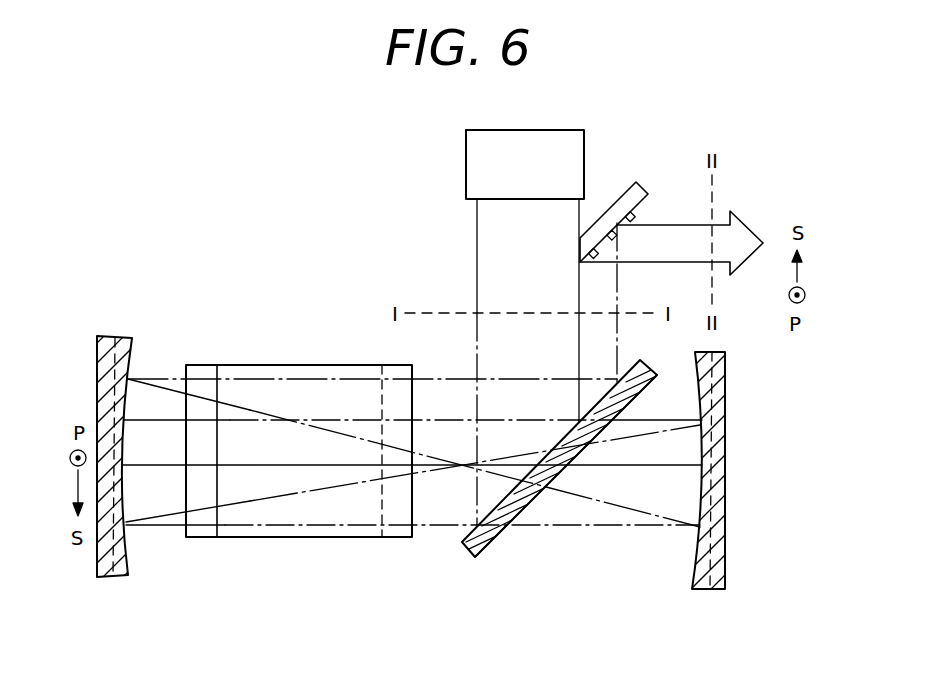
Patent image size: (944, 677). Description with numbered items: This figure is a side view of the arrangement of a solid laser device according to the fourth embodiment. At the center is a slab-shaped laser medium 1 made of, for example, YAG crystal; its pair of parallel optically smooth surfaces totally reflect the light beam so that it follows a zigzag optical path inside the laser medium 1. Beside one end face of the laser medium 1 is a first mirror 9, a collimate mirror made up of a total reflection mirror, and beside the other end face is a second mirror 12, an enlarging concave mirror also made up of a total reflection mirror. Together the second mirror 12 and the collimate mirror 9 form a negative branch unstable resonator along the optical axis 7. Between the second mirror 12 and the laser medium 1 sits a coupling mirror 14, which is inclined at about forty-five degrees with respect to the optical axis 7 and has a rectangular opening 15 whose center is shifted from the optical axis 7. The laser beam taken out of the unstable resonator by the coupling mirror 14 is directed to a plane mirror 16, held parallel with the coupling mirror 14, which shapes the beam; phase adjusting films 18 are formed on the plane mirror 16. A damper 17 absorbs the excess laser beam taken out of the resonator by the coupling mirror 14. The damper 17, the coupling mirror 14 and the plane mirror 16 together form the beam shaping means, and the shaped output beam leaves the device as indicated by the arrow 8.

The slab-shaped laser medium 1 is at (311, 539).
The optical axis 7 is at (168, 464).
The output beam arrow 8 is at (755, 222).
The first mirror 9 is at (120, 578).
The second mirror 12 is at (702, 591).
The coupling mirror 14 is at (478, 555).
The rectangular opening 15 is at (517, 503).
The plane mirror 16 is at (640, 182).
The damper 17 is at (585, 138).
The phase adjusting films 18 is at (640, 207).